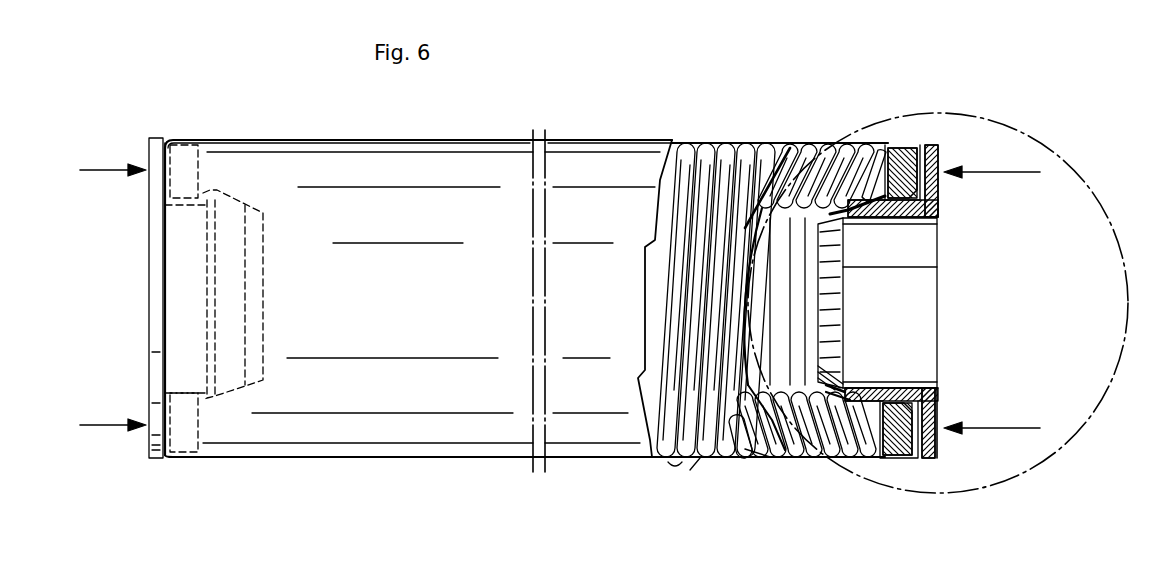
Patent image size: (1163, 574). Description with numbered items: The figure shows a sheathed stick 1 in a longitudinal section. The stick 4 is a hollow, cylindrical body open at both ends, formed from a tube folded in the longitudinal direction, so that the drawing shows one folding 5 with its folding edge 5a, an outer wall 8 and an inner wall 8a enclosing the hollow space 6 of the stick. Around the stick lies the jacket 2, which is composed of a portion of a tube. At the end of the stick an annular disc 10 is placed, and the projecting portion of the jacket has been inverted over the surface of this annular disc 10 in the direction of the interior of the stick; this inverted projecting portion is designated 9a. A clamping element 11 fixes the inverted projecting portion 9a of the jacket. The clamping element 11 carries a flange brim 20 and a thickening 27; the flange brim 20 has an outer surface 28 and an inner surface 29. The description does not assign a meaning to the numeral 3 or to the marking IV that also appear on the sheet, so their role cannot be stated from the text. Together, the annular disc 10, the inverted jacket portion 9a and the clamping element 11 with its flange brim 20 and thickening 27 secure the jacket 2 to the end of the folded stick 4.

The sheathed stick 1 is at (650, 130).
The jacket 2 is at (754, 143).
The retaining ring 3 is at (880, 470).
The hollow, cylindrical stick 4 is at (708, 277).
The folding of the stick 5 is at (698, 462).
The folding edge of the stick 5a is at (826, 386).
The hollow space of the stick 6 is at (803, 300).
The outer wall of the stick 8 is at (692, 148).
The inner wall of the stick 8a is at (806, 212).
The inverted projecting portion of the jacket 9a is at (230, 195).
The annular disc 10 is at (185, 150).
The clamping element 11 is at (130, 216).
The flange brim 20 is at (150, 148).
The thickening 27 is at (230, 393).
The outer surface of the flange brim 28 is at (150, 296).
The inner surface of the flange brim 29 is at (918, 458).
The detail view IV is at (992, 112).